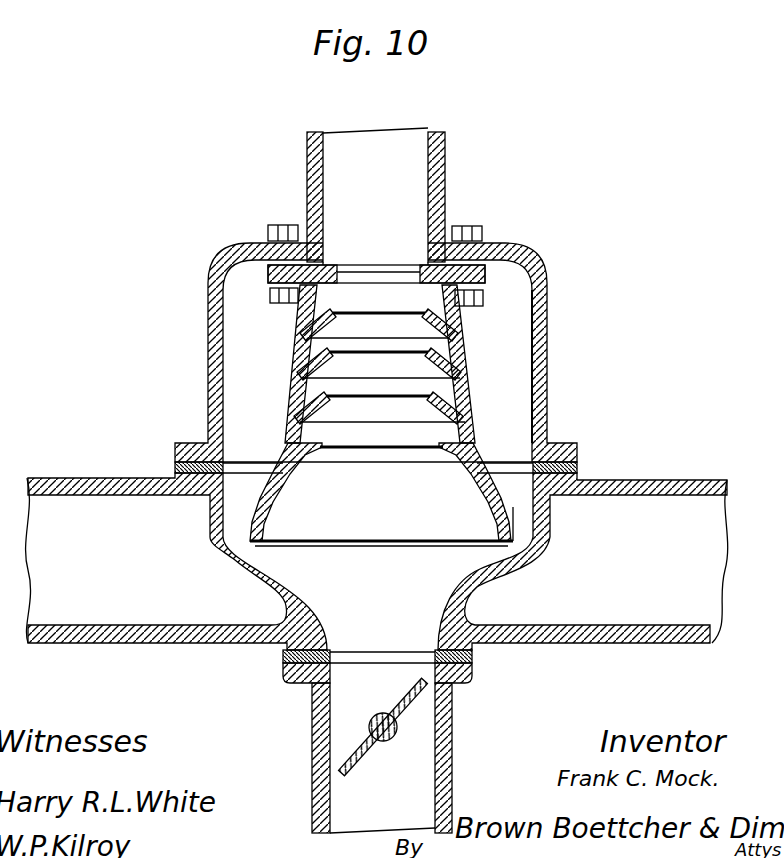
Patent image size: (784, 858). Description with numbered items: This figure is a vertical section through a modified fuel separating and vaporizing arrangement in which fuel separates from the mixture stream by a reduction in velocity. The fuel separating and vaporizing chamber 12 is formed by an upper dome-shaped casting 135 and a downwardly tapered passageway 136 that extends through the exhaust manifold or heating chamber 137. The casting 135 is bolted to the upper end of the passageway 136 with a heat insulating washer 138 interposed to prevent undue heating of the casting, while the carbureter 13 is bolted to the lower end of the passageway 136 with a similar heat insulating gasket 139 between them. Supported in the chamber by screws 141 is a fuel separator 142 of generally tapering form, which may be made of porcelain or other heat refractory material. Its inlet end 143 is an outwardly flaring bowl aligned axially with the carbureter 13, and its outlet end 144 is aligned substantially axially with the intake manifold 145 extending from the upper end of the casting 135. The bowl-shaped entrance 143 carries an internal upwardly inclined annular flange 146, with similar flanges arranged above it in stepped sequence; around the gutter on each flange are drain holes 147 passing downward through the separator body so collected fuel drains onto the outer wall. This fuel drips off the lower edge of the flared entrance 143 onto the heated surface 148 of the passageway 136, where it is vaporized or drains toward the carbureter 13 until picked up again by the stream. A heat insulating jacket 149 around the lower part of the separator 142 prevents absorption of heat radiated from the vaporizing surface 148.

The fuel separating and vaporizing chamber 12 is at (232, 328).
The carbureter 13 is at (333, 707).
The upper dome-shaped casting 135 is at (547, 412).
The downwardly tapered passageway 136 is at (450, 593).
The exhaust manifold or heating chamber 137 is at (218, 650).
The heat insulating washer 138 is at (577, 462).
The heat insulating gasket 139 is at (472, 663).
The screws 141 is at (483, 234).
The fuel separator 142 is at (478, 414).
The inlet end 143 is at (353, 527).
The outlet end 144 is at (393, 280).
The intake manifold 145 is at (307, 176).
The annular flange 146 is at (297, 388).
The drain holes 147 is at (458, 358).
The heated surface 148 is at (528, 553).
The heat insulating jacket 149 is at (513, 515).